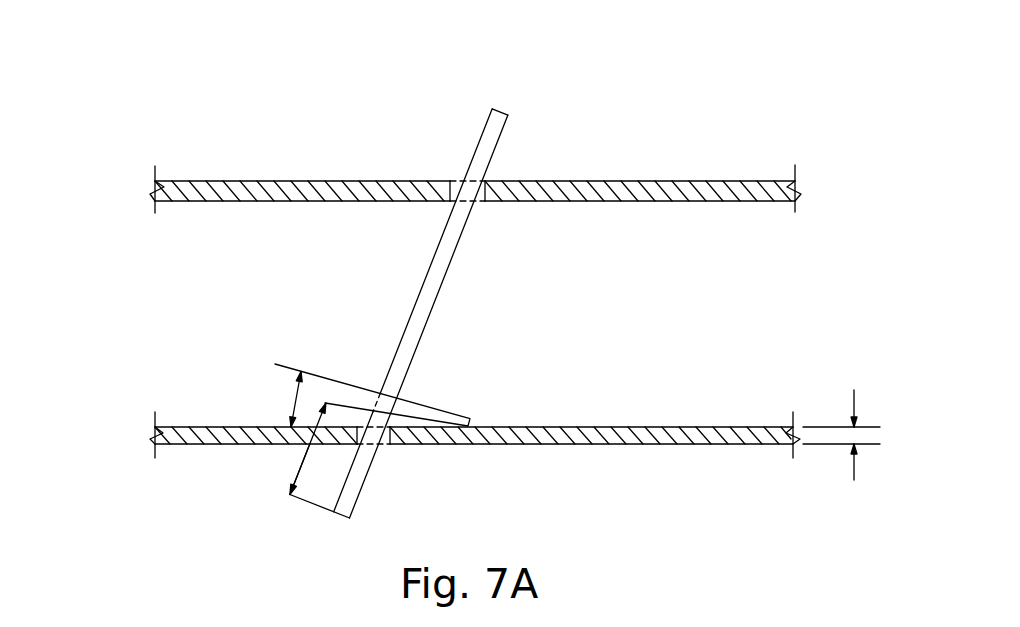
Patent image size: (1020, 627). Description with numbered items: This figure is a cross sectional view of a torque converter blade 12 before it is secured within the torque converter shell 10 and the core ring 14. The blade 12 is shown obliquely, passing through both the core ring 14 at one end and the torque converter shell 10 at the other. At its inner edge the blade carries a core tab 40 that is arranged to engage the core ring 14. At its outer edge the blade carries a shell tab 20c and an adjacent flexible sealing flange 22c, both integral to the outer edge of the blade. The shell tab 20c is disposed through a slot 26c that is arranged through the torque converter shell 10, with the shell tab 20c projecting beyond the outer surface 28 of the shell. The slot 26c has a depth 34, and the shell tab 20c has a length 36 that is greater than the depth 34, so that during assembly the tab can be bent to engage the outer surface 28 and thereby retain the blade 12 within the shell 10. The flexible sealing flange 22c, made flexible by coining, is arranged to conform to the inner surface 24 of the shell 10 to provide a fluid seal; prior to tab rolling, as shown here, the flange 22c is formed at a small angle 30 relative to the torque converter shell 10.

The torque converter shell 10 is at (135, 495).
The torque converter blade 12 is at (433, 275).
The core ring 14 is at (620, 181).
The shell tab 20c is at (340, 497).
The flexible sealing flange 22c is at (436, 407).
The inner surface 24 is at (632, 427).
The slot 26c is at (389, 445).
The outer surface 28 is at (592, 445).
The angle 30 is at (295, 400).
The depth 34 is at (841, 448).
The length 36 is at (307, 450).
The core tab 40 is at (498, 140).